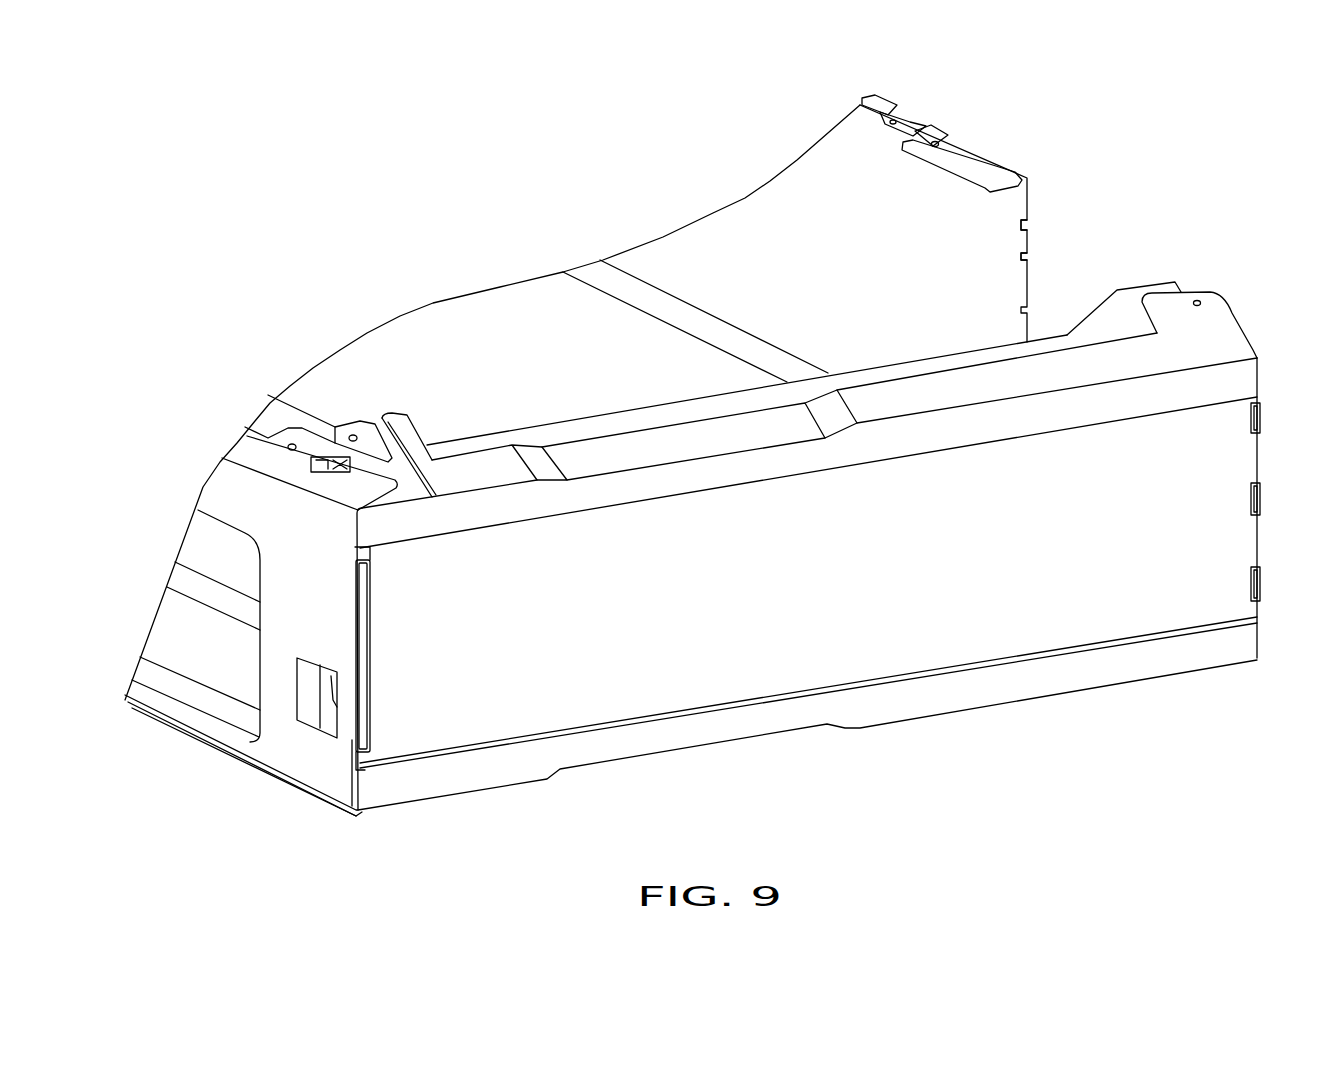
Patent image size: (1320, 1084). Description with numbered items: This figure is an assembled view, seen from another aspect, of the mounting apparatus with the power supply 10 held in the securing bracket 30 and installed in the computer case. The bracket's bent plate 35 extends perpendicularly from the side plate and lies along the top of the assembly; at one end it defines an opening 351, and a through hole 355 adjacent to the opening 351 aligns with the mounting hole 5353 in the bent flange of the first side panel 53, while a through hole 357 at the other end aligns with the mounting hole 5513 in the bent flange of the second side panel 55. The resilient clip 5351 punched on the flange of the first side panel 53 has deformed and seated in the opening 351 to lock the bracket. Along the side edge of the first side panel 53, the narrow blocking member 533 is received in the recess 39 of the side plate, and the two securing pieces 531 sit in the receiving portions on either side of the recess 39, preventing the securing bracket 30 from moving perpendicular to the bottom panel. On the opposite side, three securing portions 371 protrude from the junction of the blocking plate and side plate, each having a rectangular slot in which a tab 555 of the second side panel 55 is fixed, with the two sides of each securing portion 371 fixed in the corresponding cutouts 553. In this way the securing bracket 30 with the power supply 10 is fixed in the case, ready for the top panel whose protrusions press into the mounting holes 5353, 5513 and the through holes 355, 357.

The power supply 10 is at (1127, 313).
The securing bracket 30 is at (1157, 617).
The bent plate 35 is at (480, 473).
The opening 351 is at (378, 458).
The through hole 355 is at (353, 433).
The through hole 357 is at (1199, 300).
The securing portion 371 is at (1262, 418).
The recess 39 is at (370, 728).
The first side panel 53 is at (282, 745).
The securing piece 531 is at (357, 795).
The blocking member 533 is at (362, 741).
The resilient clip 5351 is at (340, 468).
The mounting hole 5353 is at (288, 447).
The second side panel 55 is at (987, 217).
The cutouts 553 is at (1028, 222).
The tab 555 is at (1028, 256).
The mounting hole 5513 is at (937, 142).